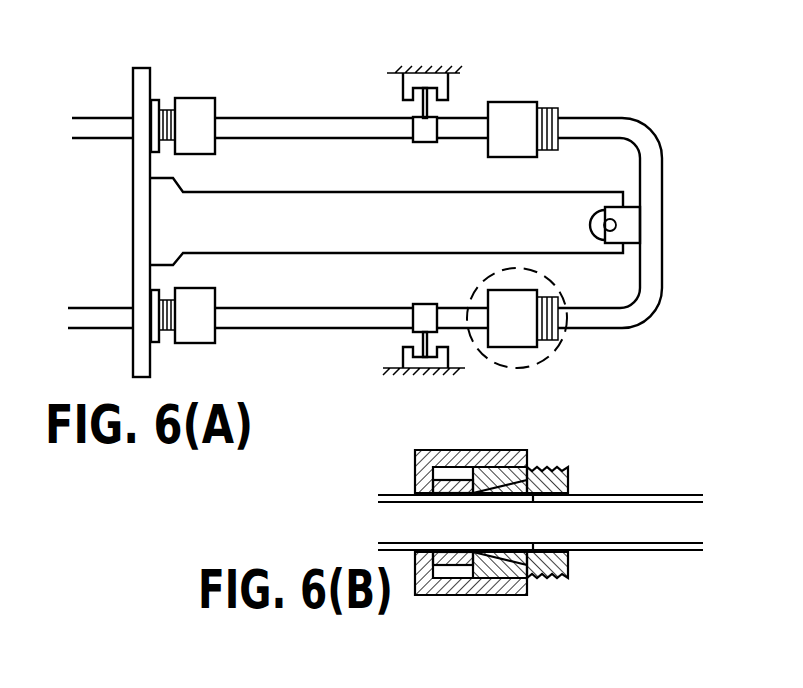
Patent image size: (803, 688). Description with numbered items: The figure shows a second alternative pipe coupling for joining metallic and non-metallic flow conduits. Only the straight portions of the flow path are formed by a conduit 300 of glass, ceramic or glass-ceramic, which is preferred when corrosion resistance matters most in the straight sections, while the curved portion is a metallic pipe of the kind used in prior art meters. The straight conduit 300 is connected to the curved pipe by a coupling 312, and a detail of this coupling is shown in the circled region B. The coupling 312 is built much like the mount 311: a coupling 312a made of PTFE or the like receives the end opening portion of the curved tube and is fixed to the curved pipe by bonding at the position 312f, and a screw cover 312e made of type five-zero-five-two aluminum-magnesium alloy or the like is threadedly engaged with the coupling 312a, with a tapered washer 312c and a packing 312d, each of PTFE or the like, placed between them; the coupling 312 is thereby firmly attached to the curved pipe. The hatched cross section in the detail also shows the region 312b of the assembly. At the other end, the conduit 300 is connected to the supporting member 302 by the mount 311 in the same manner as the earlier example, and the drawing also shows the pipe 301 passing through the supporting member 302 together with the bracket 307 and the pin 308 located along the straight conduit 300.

The conduit 300 is at (268, 118).
The pipe 301 is at (107, 117).
The supporting member 302 is at (140, 73).
The bracket 307 is at (447, 92).
The pin 308 is at (422, 110).
The mount 311 is at (200, 105).
The coupling 312 is at (508, 107).
The coupling 312a is at (567, 468).
The nut 312b is at (547, 583).
The tapered washer 312c is at (485, 482).
The packing 312d is at (447, 457).
The screw cover 312e is at (415, 470).
The bonding position 312f is at (570, 553).
The detail region B is at (550, 355).